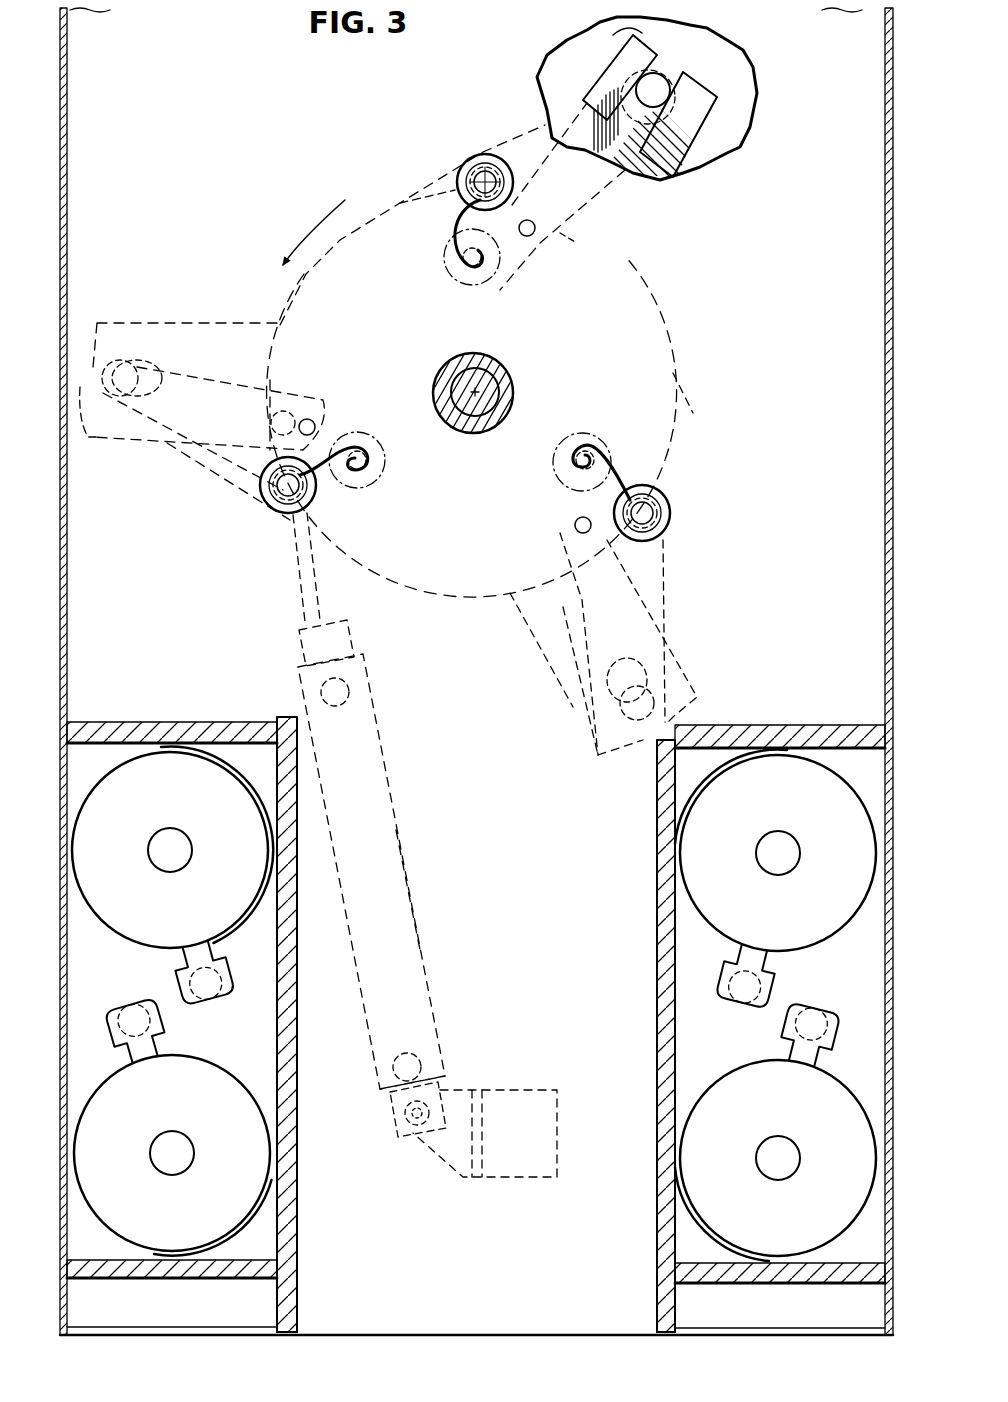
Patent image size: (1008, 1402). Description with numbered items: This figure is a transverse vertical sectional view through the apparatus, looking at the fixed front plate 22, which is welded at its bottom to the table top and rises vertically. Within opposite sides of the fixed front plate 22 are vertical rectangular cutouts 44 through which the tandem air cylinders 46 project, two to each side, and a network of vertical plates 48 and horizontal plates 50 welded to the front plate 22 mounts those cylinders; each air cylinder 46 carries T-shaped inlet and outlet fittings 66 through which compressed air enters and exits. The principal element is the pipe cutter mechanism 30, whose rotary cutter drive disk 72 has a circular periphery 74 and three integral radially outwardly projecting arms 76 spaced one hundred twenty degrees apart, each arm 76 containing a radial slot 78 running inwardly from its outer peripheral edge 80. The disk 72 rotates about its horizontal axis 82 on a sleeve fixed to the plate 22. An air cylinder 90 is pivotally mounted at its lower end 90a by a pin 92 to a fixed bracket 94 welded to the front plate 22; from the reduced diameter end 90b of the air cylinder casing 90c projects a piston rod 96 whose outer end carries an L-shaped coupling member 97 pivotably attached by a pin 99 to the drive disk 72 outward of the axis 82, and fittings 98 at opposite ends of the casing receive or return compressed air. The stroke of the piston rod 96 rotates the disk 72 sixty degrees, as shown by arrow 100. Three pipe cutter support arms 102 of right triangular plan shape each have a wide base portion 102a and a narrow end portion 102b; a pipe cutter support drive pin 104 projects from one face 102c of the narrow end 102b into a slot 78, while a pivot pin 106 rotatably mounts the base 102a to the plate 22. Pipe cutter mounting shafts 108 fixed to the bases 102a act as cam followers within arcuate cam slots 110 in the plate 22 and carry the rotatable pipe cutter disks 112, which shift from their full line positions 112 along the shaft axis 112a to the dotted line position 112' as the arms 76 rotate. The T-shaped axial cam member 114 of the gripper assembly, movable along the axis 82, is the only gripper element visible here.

The fixed front plate 22 is at (818, 432).
The pipe cutter mechanism 30 is at (712, 304).
The vertical rectangular cutouts 44 is at (286, 991).
The tandem air cylinders 46 is at (158, 933).
The vertical plates 48 is at (288, 878).
The horizontal plates 50 is at (162, 732).
The T-shaped inlet and outlet fittings 66 is at (176, 1008).
The rotary cutter drive disk 72 is at (448, 597).
The circular periphery 74 is at (690, 407).
The radially outwardly projecting arms 76 is at (700, 112).
The radial slot 78 is at (656, 80).
The outer peripheral edge 80 is at (616, 40).
The horizontal axis 82 is at (470, 392).
The air cylinder 90 is at (384, 802).
The cylinder end 90a is at (430, 1068).
The reduced diameter end 90b is at (298, 651).
The air cylinder casing 90c is at (414, 880).
The pin 92 is at (404, 1122).
The fixed bracket 94 is at (520, 1090).
The piston rod 96 is at (298, 573).
The L-shaped coupling member 97 is at (270, 430).
The fittings 98 is at (352, 693).
The pin 99 is at (270, 382).
The arrow 100 is at (300, 238).
The pipe cutter support arms 102 is at (572, 110).
The wide base portion 102a is at (556, 238).
The narrow end portion 102b is at (612, 74).
The face 102c is at (590, 176).
The pipe cutter support drive pin 104 is at (660, 92).
The pivot pin 106 is at (527, 237).
The pipe cutter mounting shafts 108 is at (483, 172).
The arcuate cam slots 110 is at (455, 230).
The pipe cutter disks 112 is at (449, 178).
The pivot axis line 112a is at (462, 200).
The dotted line position of pipe cutter disks 112' is at (442, 279).
The axial cam member 114 is at (504, 404).